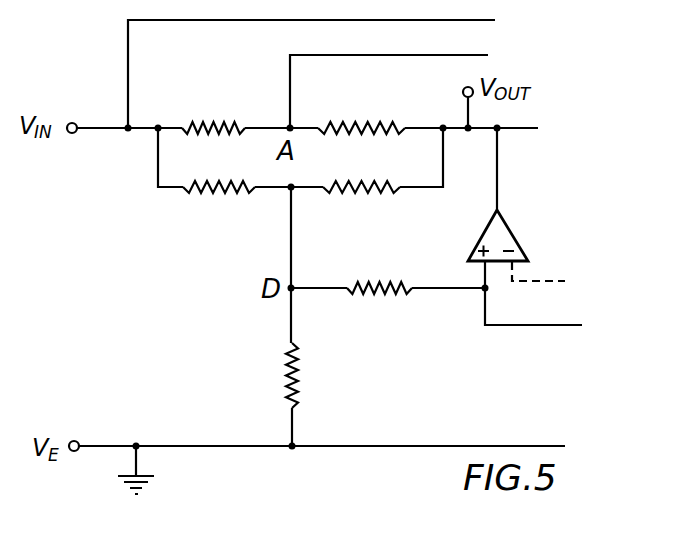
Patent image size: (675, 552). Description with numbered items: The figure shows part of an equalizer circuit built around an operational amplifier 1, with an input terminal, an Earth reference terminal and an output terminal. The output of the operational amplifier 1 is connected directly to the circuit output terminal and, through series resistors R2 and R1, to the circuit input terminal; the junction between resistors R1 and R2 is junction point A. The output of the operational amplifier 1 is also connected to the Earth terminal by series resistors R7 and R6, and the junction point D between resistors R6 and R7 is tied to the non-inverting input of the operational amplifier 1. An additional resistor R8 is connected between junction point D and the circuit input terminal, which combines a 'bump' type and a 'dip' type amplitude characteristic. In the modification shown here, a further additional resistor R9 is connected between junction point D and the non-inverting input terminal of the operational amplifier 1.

The operational amplifier 1 is at (517, 239).
The resistor R1 is at (213, 145).
The resistor R2 is at (361, 146).
The resistor R6 is at (272, 375).
The resistor R7 is at (361, 207).
The additional resistor R8 is at (219, 207).
The additional resistor R9 is at (379, 306).